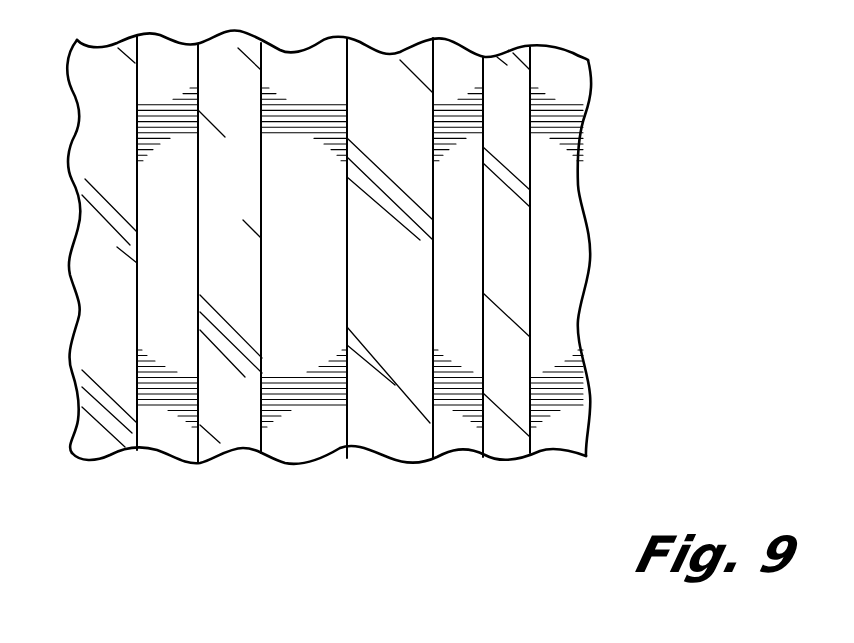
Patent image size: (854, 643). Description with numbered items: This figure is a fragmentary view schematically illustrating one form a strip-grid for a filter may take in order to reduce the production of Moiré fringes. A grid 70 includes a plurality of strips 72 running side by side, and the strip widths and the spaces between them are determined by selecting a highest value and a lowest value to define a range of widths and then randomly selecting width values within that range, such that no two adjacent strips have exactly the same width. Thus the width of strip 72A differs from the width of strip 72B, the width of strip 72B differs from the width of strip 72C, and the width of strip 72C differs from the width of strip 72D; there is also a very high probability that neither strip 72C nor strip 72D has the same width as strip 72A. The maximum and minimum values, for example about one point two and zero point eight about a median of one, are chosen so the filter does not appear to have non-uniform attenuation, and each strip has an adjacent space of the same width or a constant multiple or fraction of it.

The grid 70 is at (673, 197).
The strips 72 is at (600, 474).
The strip 72A is at (153, 430).
The strip 72B is at (308, 200).
The strip 72C is at (450, 327).
The strip 72D is at (560, 297).